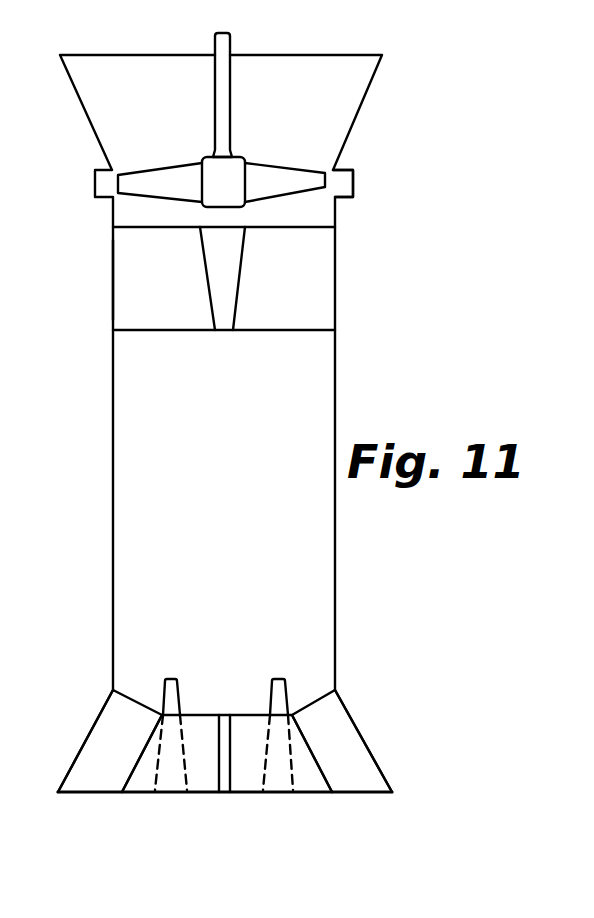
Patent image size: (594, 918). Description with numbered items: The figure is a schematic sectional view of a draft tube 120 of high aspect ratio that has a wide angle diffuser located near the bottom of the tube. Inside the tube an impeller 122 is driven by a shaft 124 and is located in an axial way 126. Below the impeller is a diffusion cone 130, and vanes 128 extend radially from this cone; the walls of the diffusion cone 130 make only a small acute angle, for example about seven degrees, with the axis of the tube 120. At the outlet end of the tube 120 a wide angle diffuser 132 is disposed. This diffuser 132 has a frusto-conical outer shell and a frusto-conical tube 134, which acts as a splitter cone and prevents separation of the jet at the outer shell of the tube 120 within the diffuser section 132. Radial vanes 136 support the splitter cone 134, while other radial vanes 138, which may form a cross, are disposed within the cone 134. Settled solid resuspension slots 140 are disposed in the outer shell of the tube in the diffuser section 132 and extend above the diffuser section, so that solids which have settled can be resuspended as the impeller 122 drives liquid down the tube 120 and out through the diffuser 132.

The draft tube 120 is at (318, 282).
The impeller 122 is at (162, 180).
The shaft 124 is at (215, 93).
The axial way 126 is at (343, 185).
The vanes 128 is at (120, 275).
The diffusion cone 130 is at (207, 277).
The wide angle diffuser 132 is at (342, 705).
The frustro-conical tube 134 is at (130, 780).
The radial vanes 136 is at (88, 777).
The radial vanes 138 is at (308, 782).
The settled solid resuspension slots 140 is at (178, 688).